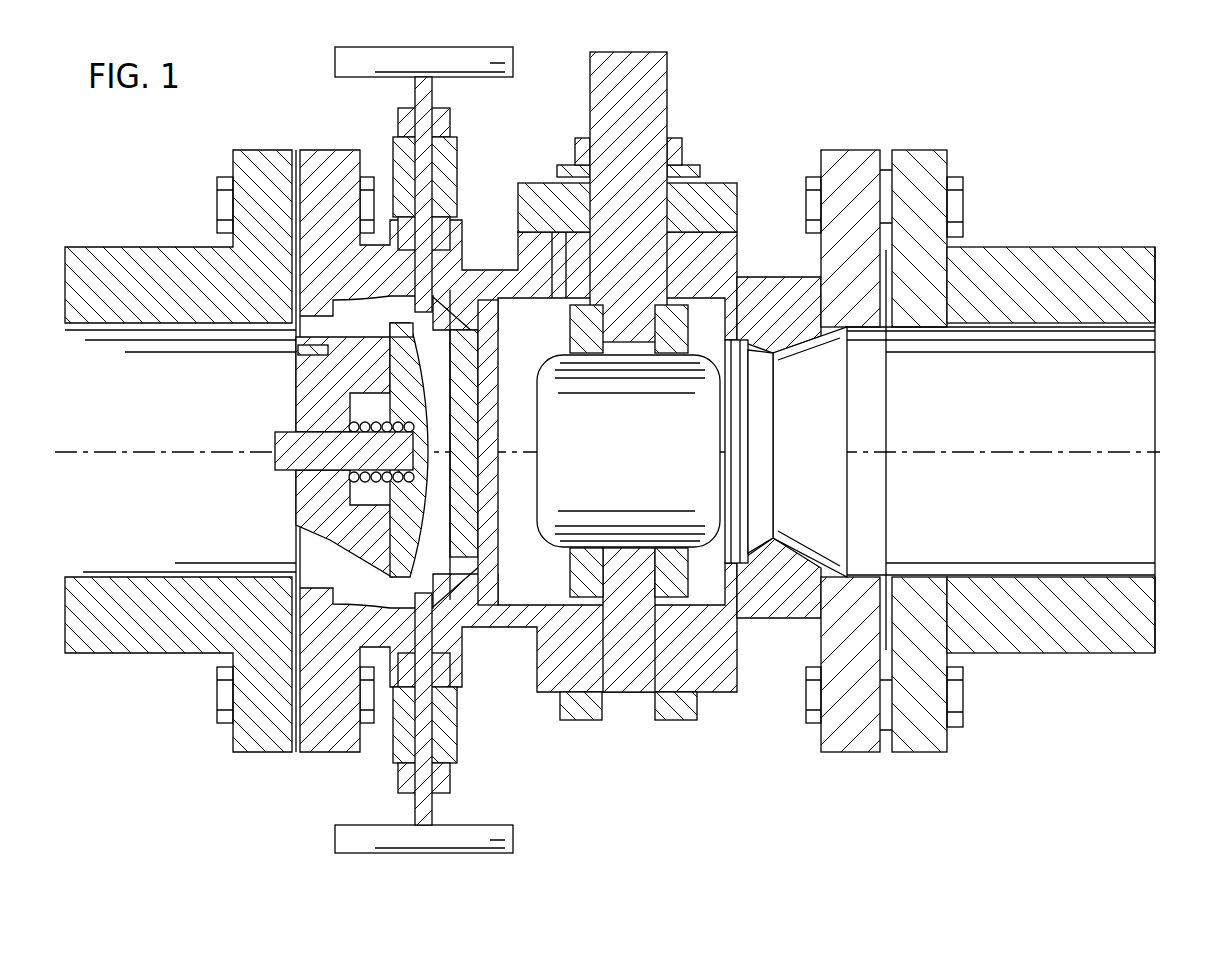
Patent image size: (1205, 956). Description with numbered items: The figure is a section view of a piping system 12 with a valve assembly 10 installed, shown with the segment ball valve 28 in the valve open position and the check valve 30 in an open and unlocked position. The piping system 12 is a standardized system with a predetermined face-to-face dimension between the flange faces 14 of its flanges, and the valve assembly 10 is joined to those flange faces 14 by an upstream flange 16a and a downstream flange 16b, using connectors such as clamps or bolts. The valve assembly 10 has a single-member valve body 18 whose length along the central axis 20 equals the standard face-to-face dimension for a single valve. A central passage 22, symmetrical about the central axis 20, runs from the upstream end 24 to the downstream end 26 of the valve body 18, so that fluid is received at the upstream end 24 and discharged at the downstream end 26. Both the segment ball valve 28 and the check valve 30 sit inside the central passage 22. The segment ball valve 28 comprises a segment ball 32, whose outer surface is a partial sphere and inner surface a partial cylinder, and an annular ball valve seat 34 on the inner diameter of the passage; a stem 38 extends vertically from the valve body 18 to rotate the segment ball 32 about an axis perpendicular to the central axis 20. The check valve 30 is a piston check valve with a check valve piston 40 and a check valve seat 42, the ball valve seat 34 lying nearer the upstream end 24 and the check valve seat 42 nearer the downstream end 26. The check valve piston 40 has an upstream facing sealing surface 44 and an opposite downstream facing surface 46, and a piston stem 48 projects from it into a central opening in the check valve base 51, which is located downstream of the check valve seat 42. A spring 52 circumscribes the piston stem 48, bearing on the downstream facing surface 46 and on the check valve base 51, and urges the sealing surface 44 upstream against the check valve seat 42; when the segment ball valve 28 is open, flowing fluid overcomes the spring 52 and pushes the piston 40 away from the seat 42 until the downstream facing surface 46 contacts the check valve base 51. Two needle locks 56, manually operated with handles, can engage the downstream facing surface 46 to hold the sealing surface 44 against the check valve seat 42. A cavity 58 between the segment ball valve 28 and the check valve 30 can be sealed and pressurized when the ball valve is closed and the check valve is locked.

The valve assembly 10 is at (872, 77).
The piping system 12 is at (1035, 247).
The flange faces 14 is at (893, 162).
The upstream flange 16a is at (845, 752).
The downstream flange 16b is at (330, 752).
The valve body 18 is at (775, 600).
The central axis 20 is at (1030, 450).
The central passage 22 is at (828, 340).
The upstream end 24 is at (890, 617).
The downstream end 26 is at (296, 628).
The segment ball valve 28 is at (548, 600).
The check valve 30 is at (460, 428).
The segment ball 32 is at (553, 340).
The ball valve seat 34 is at (765, 555).
The stem 38 is at (667, 90).
The check valve piston 40 is at (395, 510).
The check valve seat 42 is at (440, 570).
The upstream facing sealing surface 44 is at (392, 340).
The downstream facing surface 46 is at (398, 490).
The piston stem 48 is at (330, 437).
The check valve base 51 is at (300, 350).
The spring 52 is at (405, 392).
The needle locks 56 is at (400, 262).
The cavity 58 is at (627, 520).